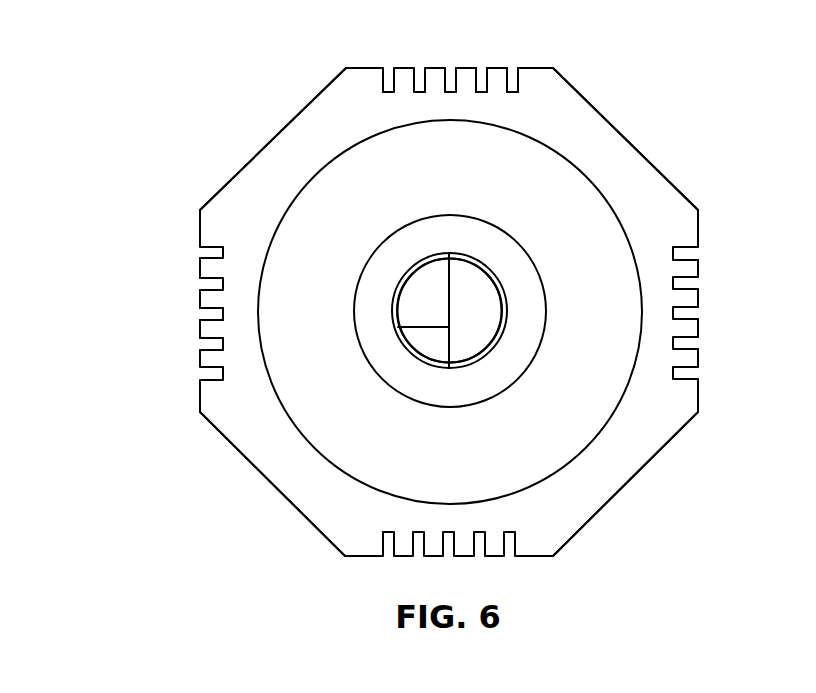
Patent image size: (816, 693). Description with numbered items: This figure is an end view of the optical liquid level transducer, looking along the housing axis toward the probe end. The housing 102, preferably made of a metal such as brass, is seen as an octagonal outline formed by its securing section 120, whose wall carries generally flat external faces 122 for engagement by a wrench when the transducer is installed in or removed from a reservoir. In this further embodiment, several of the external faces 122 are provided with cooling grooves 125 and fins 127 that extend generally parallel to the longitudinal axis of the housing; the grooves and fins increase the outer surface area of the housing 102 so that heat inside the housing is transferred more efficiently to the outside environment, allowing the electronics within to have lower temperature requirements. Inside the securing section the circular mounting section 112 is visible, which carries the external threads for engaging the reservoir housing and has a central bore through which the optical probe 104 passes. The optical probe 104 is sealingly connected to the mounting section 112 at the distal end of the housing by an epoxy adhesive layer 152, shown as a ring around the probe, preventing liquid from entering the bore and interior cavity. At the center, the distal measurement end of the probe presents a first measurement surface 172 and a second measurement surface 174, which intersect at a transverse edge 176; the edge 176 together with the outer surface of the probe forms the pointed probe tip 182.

The housing 102 is at (698, 318).
The optical probe 104 is at (459, 254).
The mounting section 112 is at (373, 247).
The securing section 120 is at (226, 178).
The external faces 122 is at (368, 68).
The cooling grooves 125 is at (446, 77).
The fins 127 is at (462, 83).
The epoxy adhesive layer 152 is at (483, 267).
The first measurement surface 172 is at (423, 305).
The second measurement surface 174 is at (480, 318).
The transverse edge 176 is at (398, 327).
The probe tip 182 is at (449, 364).